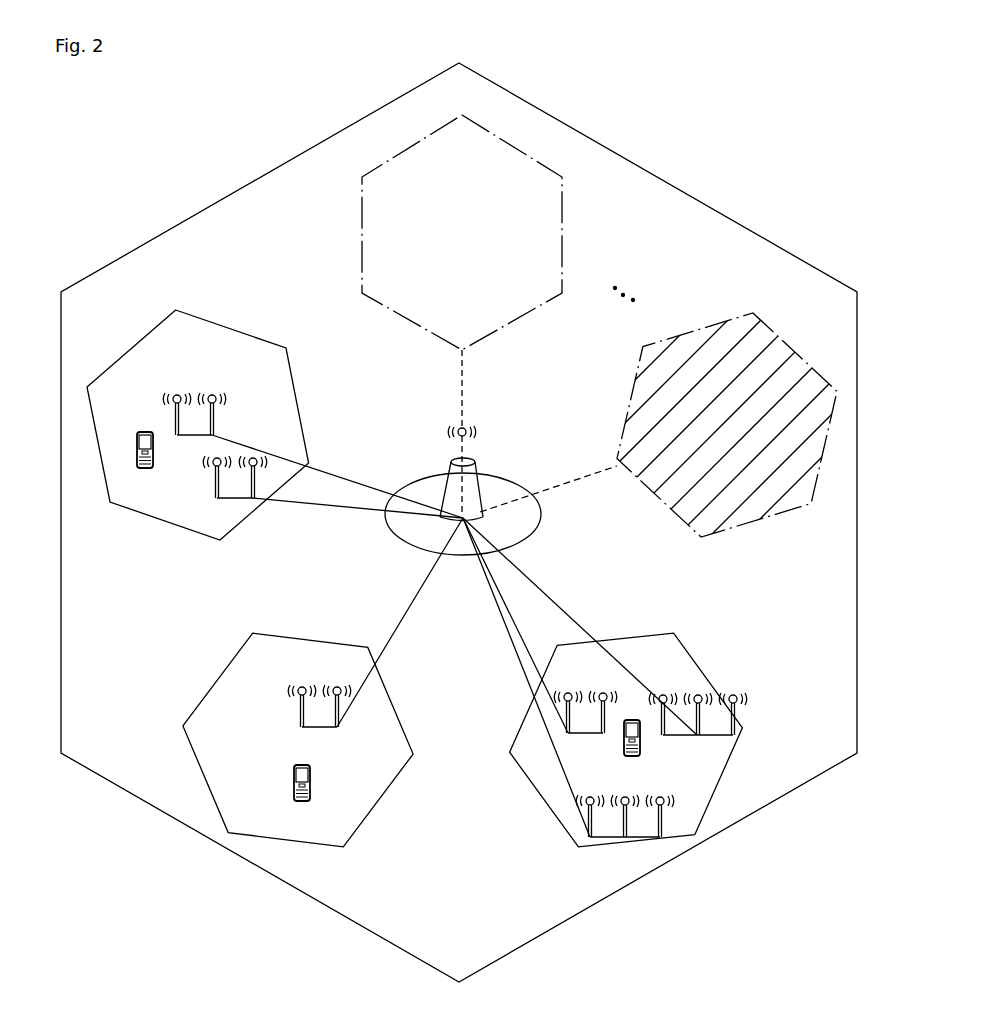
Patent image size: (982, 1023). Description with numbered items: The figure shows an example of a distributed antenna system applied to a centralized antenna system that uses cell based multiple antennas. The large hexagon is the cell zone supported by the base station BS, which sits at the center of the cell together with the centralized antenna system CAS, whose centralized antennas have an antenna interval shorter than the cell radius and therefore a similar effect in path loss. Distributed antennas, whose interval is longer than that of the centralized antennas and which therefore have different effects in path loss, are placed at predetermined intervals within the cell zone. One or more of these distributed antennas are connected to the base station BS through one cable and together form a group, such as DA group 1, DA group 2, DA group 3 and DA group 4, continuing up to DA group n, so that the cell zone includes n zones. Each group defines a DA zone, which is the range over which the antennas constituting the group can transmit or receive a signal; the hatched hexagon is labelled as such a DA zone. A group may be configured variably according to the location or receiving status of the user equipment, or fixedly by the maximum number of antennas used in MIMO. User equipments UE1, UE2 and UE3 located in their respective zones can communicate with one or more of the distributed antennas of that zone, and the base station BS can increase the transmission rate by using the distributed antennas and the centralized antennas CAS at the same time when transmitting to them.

The base station BS is at (461, 473).
The centralized antenna system CAS is at (463, 514).
The user equipment UE1 is at (145, 463).
The user equipment UE2 is at (300, 797).
The user equipment UE3 is at (632, 753).
The DA group DA group 1 is at (198, 425).
The DA group DA group 2 is at (298, 740).
The DA group DA group 3 is at (628, 740).
The DA group DA group 4 is at (725, 422).
The DA group DA group n is at (462, 232).
The element DA zone is at (720, 527).